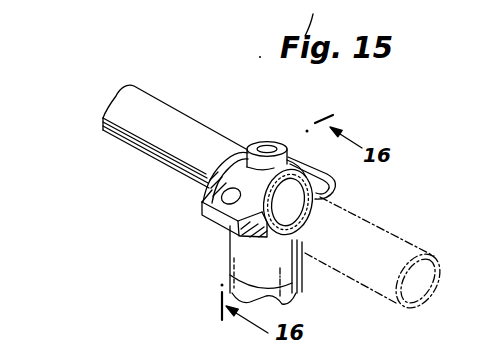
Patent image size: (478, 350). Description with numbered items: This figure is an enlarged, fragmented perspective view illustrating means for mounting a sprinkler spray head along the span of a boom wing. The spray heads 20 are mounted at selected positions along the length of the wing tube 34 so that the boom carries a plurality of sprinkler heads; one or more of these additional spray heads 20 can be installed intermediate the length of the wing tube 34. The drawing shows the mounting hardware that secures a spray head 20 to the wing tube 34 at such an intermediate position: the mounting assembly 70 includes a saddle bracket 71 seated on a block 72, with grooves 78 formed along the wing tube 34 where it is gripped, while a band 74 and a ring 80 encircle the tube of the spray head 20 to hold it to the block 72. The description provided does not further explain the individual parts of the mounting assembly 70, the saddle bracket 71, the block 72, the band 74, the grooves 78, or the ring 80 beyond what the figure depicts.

The spray head 20 is at (307, 288).
The wing tube 34 is at (148, 98).
The clamp assembly 70 is at (177, 197).
The saddle bracket 71 is at (222, 158).
The block 72 is at (233, 238).
The band 74 is at (334, 192).
The grooves 78 is at (182, 173).
The ring 80 is at (307, 204).